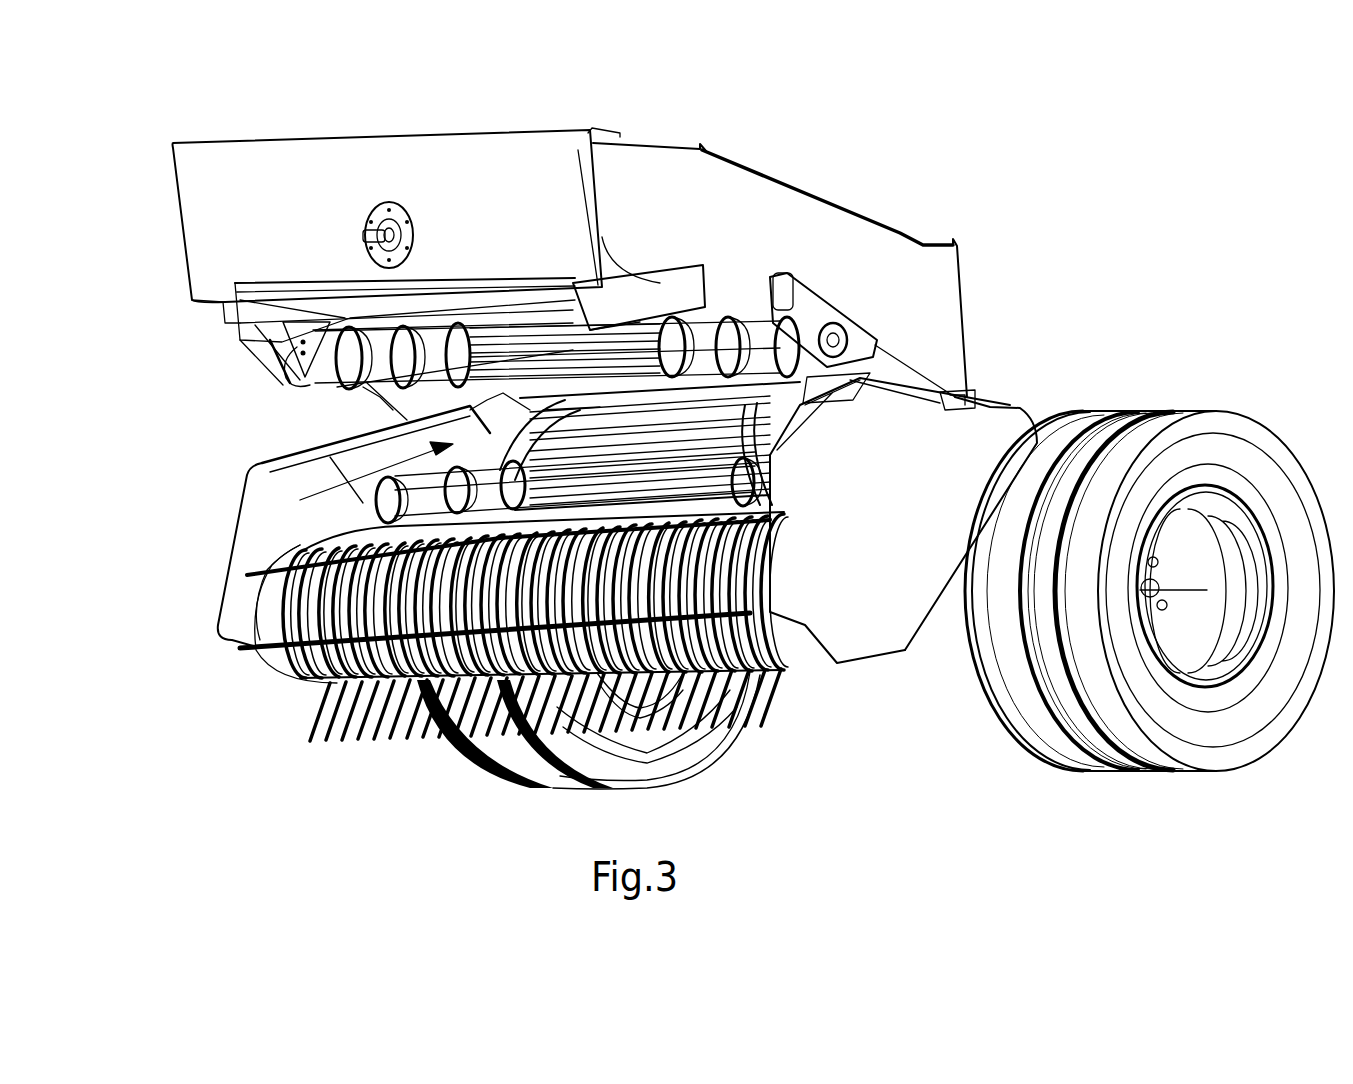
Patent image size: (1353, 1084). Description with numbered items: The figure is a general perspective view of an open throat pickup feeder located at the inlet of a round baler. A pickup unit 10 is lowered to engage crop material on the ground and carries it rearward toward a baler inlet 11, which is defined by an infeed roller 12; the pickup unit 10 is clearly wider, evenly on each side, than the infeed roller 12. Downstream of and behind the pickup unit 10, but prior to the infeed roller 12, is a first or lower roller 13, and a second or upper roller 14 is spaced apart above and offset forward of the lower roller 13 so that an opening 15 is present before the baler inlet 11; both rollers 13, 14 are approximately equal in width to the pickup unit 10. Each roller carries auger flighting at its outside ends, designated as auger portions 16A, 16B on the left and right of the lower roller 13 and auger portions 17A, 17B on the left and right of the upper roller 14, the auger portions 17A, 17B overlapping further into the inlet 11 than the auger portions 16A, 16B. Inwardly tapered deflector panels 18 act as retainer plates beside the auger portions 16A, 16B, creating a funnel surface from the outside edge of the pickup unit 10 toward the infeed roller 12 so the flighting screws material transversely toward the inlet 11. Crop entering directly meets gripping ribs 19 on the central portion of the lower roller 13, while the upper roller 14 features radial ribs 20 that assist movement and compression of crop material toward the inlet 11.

The pickup unit 10 is at (320, 610).
The baler inlet 11 is at (679, 447).
The infeed roller 12 is at (677, 423).
The lower roller 13 is at (770, 543).
The upper roller 14 is at (490, 360).
The opening 15 is at (390, 425).
The auger portion 16A is at (377, 497).
The auger portion 16B is at (637, 487).
The auger portion 17A is at (395, 363).
The auger portion 17B is at (723, 345).
The deflector panel 18 is at (330, 490).
The ribs 19 is at (663, 472).
The radial ribs 20 is at (627, 343).